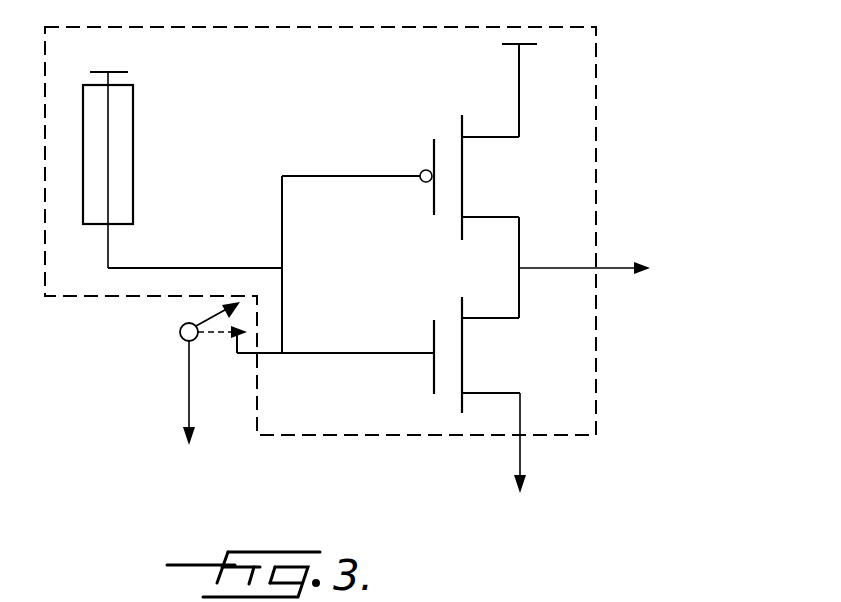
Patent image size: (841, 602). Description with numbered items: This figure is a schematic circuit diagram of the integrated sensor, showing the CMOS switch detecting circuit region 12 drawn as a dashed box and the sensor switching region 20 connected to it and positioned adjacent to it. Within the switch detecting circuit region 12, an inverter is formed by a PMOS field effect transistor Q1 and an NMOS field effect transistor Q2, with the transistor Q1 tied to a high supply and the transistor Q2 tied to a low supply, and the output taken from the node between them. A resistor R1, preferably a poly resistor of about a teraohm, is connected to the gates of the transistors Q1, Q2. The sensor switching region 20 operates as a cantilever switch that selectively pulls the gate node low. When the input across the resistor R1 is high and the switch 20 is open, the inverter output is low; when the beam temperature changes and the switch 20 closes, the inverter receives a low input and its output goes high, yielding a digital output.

The switch detecting circuit region 12 is at (326, 99).
The sensor switching region 20 is at (158, 320).
The resistor R1 is at (128, 164).
The PMOS field effect transistor Q1 is at (481, 177).
The NMOS field effect transistor Q2 is at (481, 355).